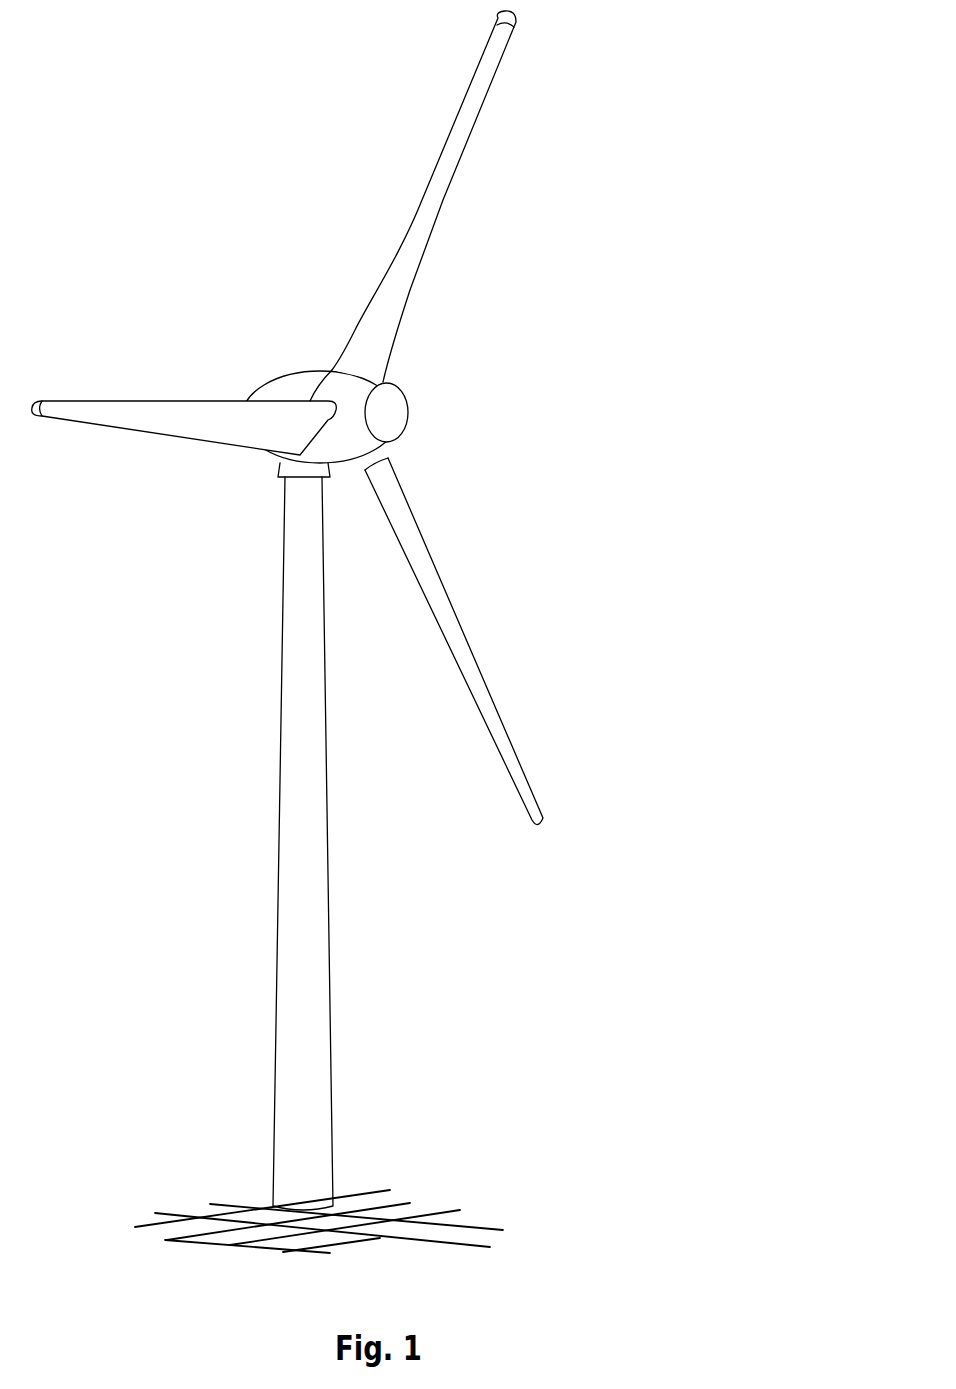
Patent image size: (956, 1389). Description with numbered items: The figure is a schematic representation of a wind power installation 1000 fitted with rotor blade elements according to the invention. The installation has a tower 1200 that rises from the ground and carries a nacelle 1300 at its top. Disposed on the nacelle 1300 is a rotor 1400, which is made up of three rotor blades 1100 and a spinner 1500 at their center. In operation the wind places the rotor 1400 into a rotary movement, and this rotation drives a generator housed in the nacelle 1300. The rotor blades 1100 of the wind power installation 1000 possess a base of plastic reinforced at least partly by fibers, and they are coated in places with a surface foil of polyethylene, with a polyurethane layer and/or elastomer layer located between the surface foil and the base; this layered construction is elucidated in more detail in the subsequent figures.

The wind power installation 1000 is at (233, 152).
The rotor blades 1100 is at (108, 410).
The tower 1200 is at (310, 955).
The nacelle 1300 is at (297, 387).
The rotor 1400 is at (492, 322).
The spinner 1500 is at (407, 412).